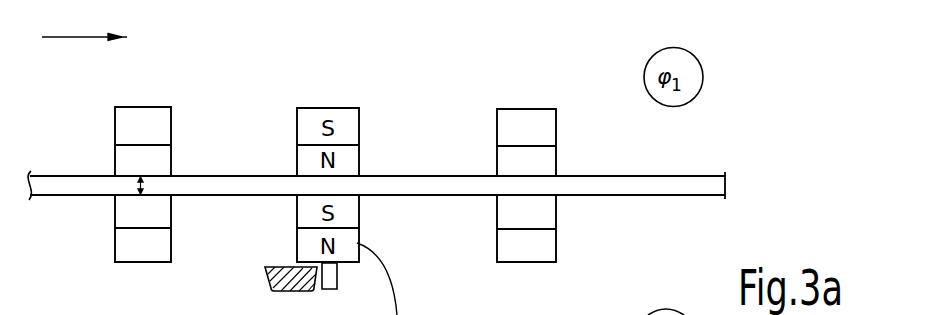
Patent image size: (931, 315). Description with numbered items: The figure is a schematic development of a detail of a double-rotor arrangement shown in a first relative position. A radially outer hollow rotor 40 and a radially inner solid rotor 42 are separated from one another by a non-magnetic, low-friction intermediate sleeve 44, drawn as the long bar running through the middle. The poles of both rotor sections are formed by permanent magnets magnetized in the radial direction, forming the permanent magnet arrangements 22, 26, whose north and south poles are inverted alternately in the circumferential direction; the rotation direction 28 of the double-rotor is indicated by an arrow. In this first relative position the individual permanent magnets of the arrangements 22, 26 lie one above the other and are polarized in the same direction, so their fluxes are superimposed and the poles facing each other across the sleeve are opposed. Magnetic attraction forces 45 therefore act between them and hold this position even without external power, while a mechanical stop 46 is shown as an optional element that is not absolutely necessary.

The permanent magnet arrangement 22 is at (565, 98).
The permanent magnet arrangement 26 is at (572, 247).
The rotation direction 28 is at (67, 36).
The radially outer hollow rotor 40 is at (648, 162).
The radially inner solid rotor 42 is at (690, 213).
The intermediate sleeve 44 is at (690, 188).
The magnetic attraction forces 45 is at (135, 184).
The mechanical stop 46 is at (272, 267).